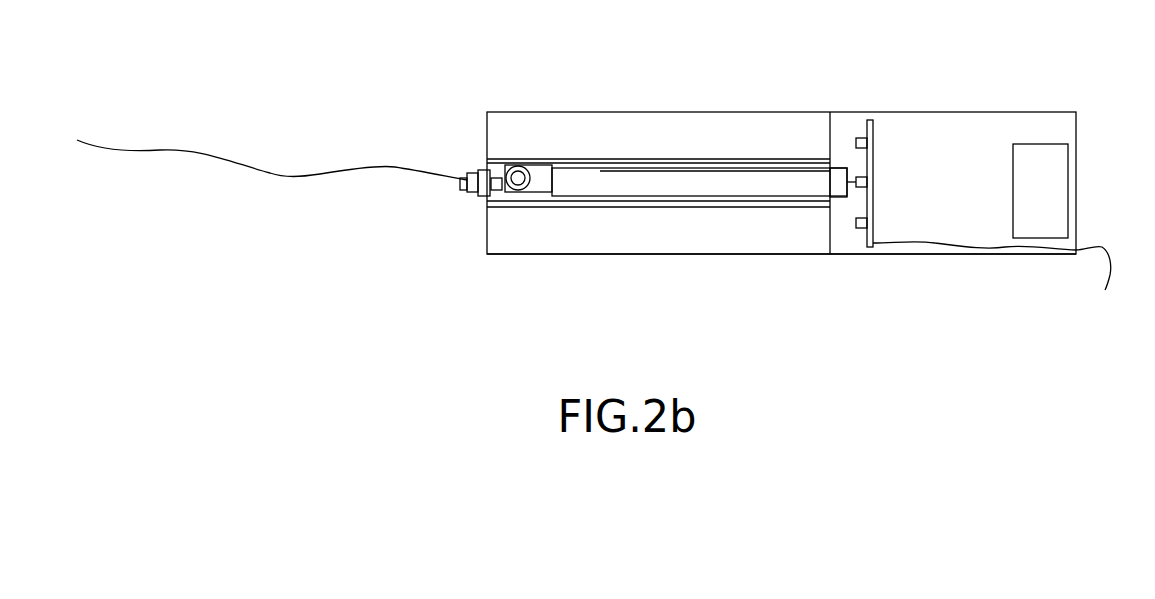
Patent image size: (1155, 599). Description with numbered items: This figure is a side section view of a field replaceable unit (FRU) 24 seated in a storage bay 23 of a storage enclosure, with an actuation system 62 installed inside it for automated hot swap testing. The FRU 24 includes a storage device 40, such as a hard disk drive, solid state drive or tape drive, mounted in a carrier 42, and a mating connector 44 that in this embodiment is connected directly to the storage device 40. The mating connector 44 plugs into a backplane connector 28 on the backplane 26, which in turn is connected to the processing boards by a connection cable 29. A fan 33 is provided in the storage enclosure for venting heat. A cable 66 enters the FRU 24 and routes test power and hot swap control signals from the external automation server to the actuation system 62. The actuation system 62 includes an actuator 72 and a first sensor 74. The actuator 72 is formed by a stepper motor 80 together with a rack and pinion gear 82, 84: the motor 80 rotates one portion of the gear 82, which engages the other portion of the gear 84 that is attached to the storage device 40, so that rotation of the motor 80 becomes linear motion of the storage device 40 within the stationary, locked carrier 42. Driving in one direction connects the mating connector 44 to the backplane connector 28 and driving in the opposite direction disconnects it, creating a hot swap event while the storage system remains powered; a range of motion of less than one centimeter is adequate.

The storage bay 23 is at (712, 232).
The field replaceable unit (FRU) 24 is at (444, 259).
The backplane 26 is at (867, 233).
The backplane connector 28 is at (861, 138).
The connection cable 29 is at (1097, 248).
The fan 33 is at (1033, 144).
The storage device 40 is at (652, 190).
The carrier 42 is at (478, 192).
The mating connector 44 is at (840, 168).
The actuation system 62 is at (499, 95).
The cable 66 is at (106, 146).
The actuator 72 is at (447, 164).
The first sensor 74 is at (481, 168).
The stepper motor 80 is at (520, 168).
The rack and pinion gear portion 82 is at (528, 196).
The rack and pinion gear portion 84 is at (499, 196).